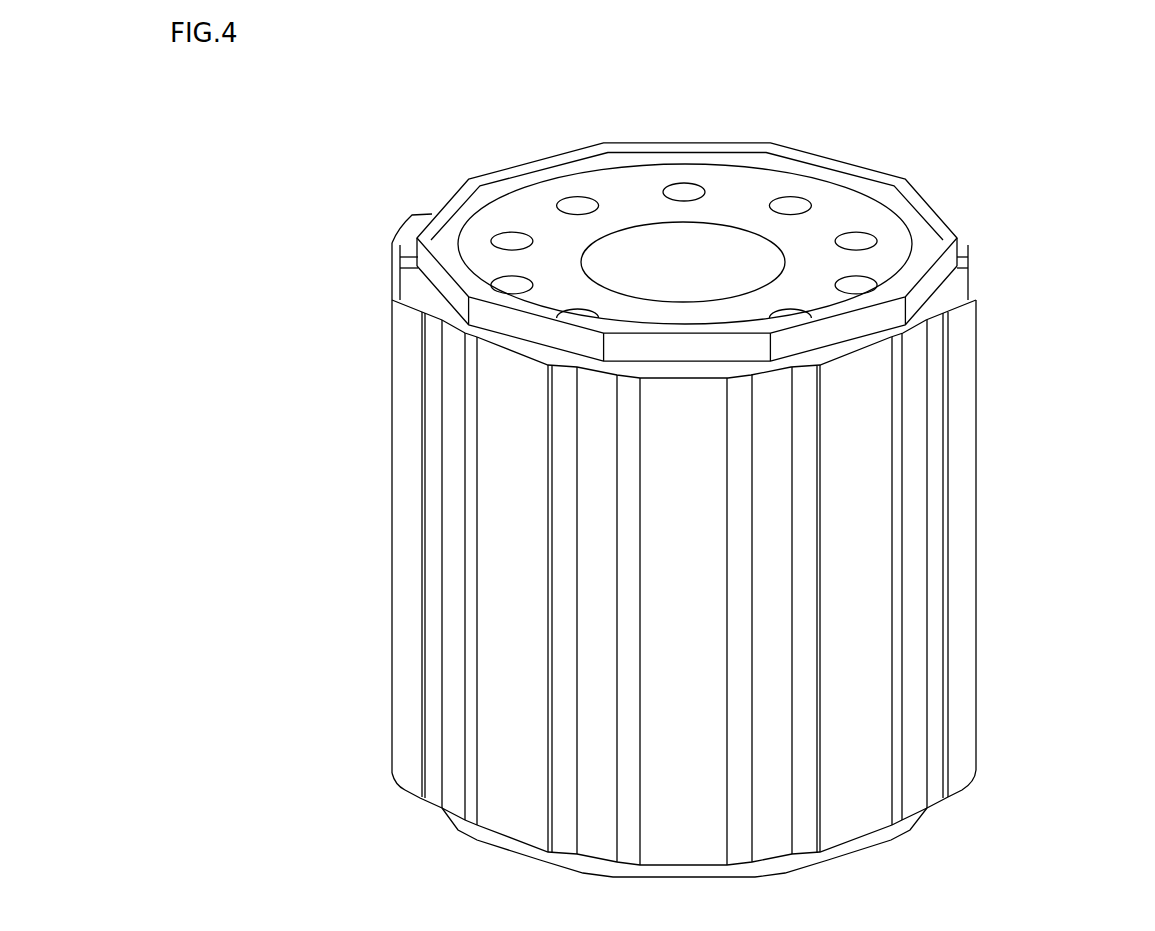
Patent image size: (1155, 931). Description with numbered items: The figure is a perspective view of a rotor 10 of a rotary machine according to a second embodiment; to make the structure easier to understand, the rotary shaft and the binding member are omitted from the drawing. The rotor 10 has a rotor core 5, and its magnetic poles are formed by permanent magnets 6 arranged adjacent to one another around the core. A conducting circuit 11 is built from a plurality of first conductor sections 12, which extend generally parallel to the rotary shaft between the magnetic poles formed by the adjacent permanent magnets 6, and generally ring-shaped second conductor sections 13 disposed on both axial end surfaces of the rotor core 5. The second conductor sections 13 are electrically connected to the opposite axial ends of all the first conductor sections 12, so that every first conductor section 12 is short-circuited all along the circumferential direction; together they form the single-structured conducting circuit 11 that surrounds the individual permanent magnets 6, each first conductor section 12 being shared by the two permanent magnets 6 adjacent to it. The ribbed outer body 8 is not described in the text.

The rotor 10 is at (472, 133).
The rotor core 5 is at (828, 222).
The permanent magnet 6 is at (418, 290).
The body 8 is at (410, 497).
The conducting circuit 11 is at (1085, 255).
The first conductor section 12 is at (912, 367).
The second conductor section 13 is at (917, 262).